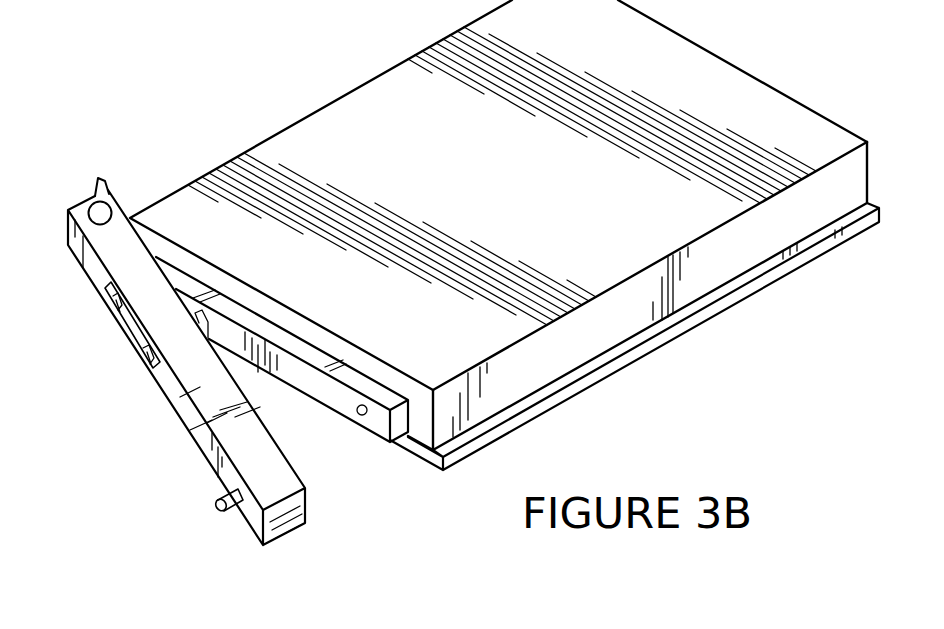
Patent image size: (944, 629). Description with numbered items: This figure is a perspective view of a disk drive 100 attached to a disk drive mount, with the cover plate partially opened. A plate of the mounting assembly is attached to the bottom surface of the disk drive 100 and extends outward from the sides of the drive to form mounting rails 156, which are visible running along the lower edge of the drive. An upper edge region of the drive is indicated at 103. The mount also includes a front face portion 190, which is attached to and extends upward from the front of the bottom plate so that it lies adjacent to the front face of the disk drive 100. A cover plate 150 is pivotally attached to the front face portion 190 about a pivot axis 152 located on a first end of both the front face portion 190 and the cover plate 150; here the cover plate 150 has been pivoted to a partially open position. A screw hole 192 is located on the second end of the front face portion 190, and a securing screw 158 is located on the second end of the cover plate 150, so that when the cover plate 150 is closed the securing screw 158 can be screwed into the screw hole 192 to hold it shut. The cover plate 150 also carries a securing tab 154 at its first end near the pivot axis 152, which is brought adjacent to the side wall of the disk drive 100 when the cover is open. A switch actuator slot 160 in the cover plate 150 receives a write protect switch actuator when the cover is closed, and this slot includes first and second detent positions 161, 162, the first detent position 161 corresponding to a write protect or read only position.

The disk drive 100 is at (383, 98).
The top edge of housing 103 is at (762, 78).
The cover plate 150 is at (175, 405).
The pivot axis 152 is at (92, 210).
The securing tab 154 is at (108, 178).
The mounting rail 156 is at (753, 285).
The securing screw 158 is at (218, 507).
The switch actuator slot 160 is at (137, 342).
The first detent position 161 is at (120, 322).
The second detent position 162 is at (143, 362).
The front face portion 190 is at (402, 428).
The screw hole 192 is at (357, 417).